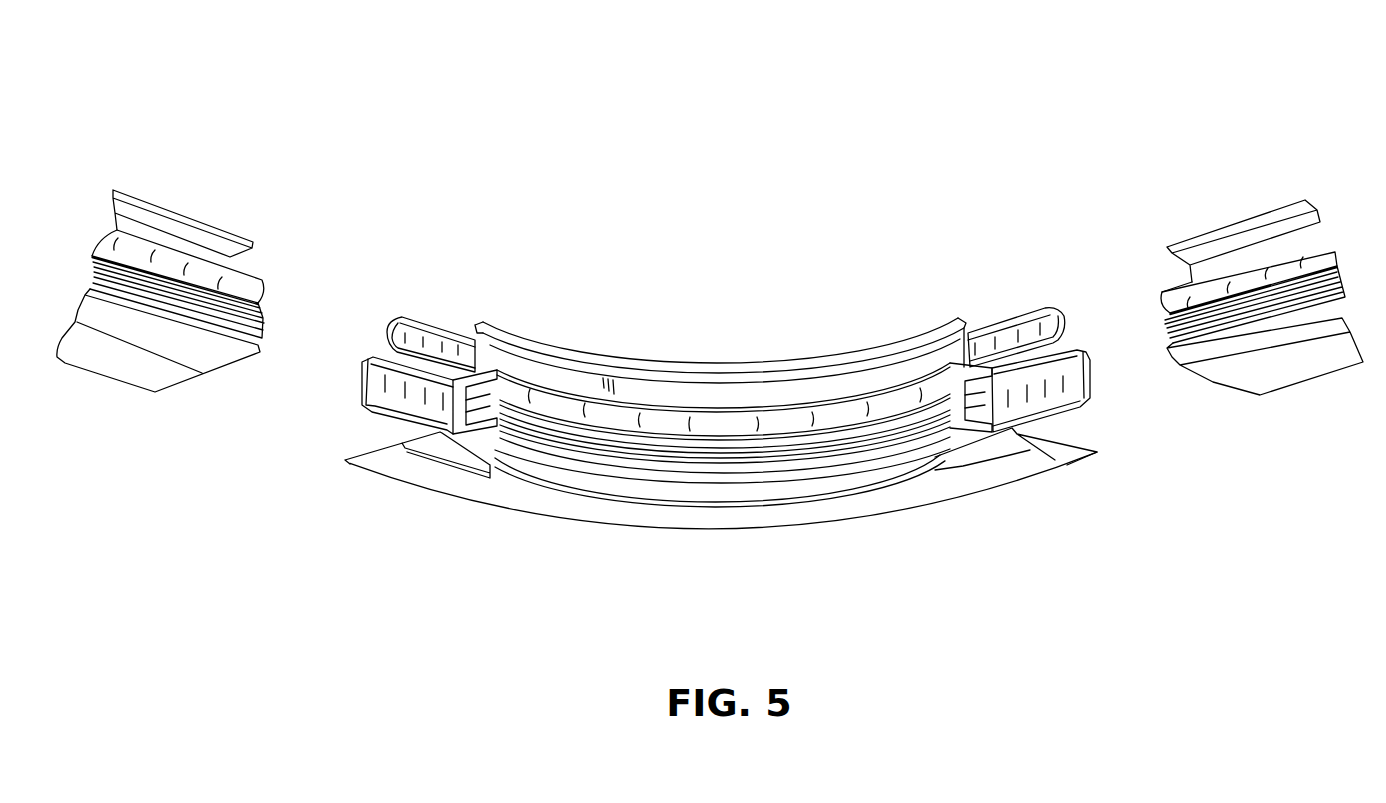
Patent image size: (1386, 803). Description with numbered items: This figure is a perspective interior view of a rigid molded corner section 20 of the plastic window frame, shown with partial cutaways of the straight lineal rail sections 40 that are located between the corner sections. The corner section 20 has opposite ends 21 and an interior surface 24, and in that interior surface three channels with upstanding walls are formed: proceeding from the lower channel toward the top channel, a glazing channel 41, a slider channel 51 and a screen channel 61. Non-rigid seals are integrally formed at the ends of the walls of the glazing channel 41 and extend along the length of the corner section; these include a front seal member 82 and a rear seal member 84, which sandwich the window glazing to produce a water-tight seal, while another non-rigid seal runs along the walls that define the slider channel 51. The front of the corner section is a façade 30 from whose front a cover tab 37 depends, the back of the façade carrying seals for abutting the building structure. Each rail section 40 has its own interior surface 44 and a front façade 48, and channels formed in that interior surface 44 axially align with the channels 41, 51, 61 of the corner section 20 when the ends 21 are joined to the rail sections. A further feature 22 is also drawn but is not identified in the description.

The corner section 20 is at (565, 217).
The opposite ends 21 is at (428, 277).
The bottom wall 22 is at (917, 512).
The interior surface 24 is at (714, 396).
The façade 30 is at (580, 510).
The cover tab 37 is at (397, 472).
The lineal rail section 40 is at (1292, 180).
The glazing channel 41 is at (988, 416).
The interior surface 44 is at (250, 261).
The front façade 48 is at (150, 365).
The slider channel 51 is at (988, 397).
The screen channel 61 is at (952, 354).
The front seal member 82 is at (803, 473).
The rear seal member 84 is at (683, 460).